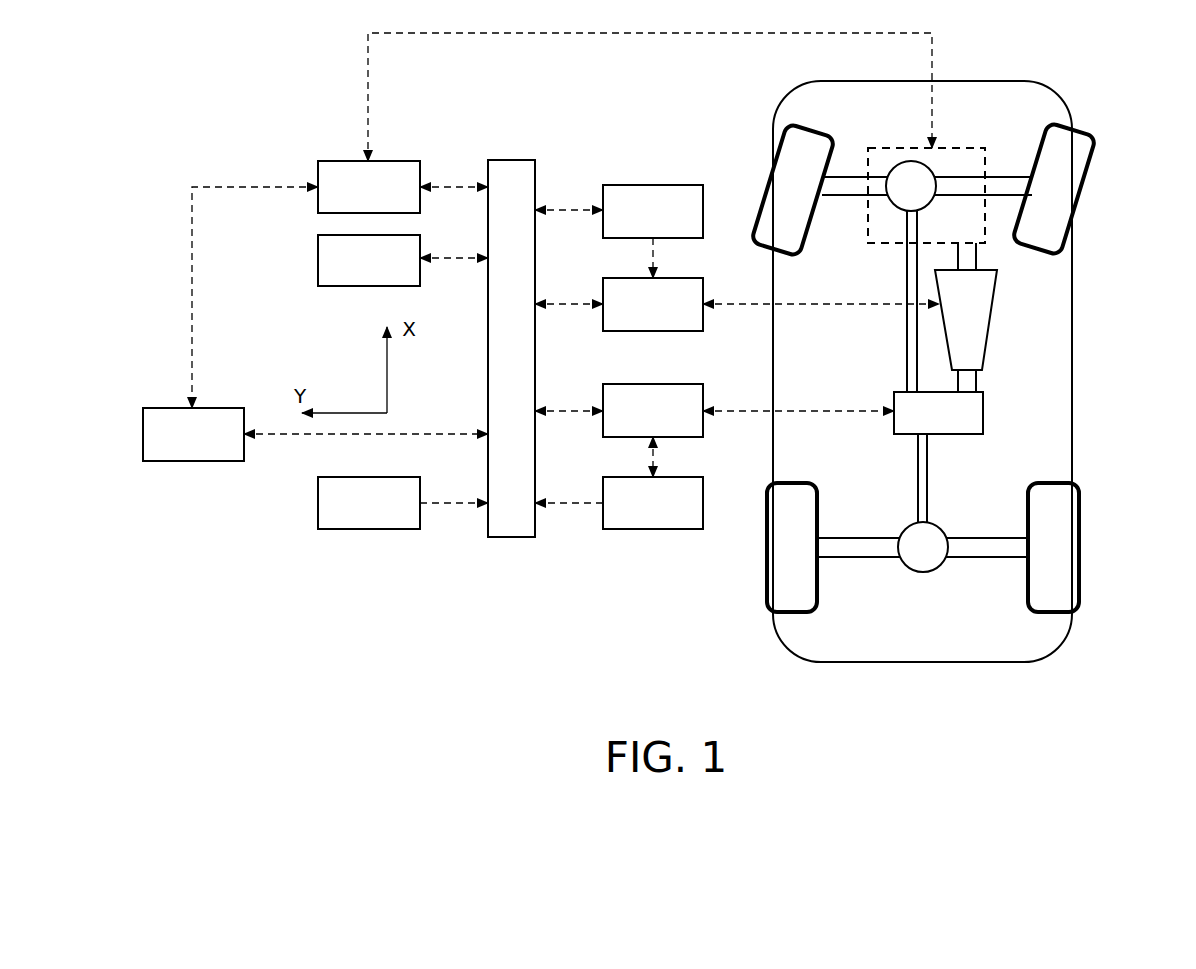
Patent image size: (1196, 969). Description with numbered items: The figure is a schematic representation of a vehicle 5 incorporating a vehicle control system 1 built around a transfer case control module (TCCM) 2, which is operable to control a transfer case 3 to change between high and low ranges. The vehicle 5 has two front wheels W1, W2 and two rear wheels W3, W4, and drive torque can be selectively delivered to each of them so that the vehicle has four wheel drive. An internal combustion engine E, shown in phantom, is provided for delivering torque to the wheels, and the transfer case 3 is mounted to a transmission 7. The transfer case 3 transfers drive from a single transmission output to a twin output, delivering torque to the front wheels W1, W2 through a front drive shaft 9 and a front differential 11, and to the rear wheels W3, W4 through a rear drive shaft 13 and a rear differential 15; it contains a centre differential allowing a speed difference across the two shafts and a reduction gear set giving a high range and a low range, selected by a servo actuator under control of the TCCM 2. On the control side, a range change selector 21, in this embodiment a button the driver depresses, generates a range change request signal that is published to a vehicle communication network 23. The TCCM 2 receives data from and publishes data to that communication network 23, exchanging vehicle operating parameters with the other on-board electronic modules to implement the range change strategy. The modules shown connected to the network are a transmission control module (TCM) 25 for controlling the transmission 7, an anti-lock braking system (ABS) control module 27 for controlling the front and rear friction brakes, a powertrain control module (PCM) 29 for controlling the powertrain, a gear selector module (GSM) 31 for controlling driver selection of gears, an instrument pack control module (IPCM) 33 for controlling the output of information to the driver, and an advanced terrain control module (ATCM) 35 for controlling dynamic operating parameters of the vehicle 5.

The vehicle control system 1 is at (557, 570).
The transfer case control module (TCCM) 2 is at (653, 410).
The transfer case 3 is at (938, 413).
The vehicle 5 is at (1085, 80).
The transmission 7 is at (966, 317).
The front drive (propeller) shaft 9 is at (907, 282).
The front differential 11 is at (927, 186).
The rear drive (propeller) shaft 13 is at (918, 472).
The rear differential 15 is at (922, 547).
The range change selector 21 is at (653, 503).
The vehicle communication network 23 is at (511, 348).
The transmission control module (TCM) 25 is at (653, 304).
The anti-lock braking system (ABS) control module 27 is at (369, 503).
The powertrain control module (PCM) 29 is at (369, 187).
The gear selector module (GSM) 31 is at (653, 211).
The instrument pack control module (IPCM) 33 is at (369, 260).
The advanced terrain control module (ATCM) 35 is at (193, 434).
The internal combustion engine E is at (962, 158).
The front wheel W1 is at (787, 143).
The front wheel W2 is at (1080, 143).
The rear wheel W3 is at (782, 593).
The rear wheel W4 is at (1070, 570).